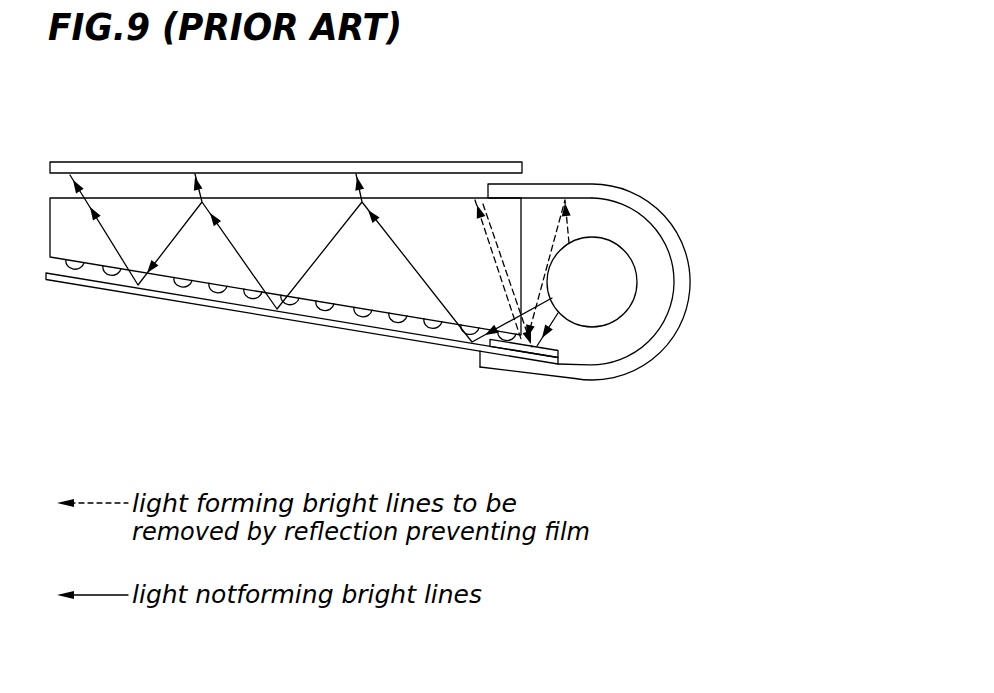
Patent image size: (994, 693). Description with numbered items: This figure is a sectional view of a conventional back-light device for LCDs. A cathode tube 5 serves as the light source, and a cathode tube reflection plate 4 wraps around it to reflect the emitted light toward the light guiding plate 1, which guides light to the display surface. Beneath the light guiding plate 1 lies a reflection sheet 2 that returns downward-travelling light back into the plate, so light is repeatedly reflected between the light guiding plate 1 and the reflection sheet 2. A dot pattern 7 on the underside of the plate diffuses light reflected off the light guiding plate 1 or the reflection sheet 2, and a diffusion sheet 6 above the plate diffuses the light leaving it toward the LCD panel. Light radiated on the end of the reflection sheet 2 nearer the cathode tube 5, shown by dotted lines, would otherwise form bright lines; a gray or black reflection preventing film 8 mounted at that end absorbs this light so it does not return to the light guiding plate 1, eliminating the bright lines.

The light guiding plate 1 is at (285, 322).
The reflection sheet 2 is at (309, 359).
The cathode tube reflection plate 4 is at (628, 234).
The cathode tube 5 is at (712, 244).
The diffusion sheet 6 is at (219, 162).
The dot pattern 7 is at (291, 312).
The reflection preventing film 8 is at (658, 406).